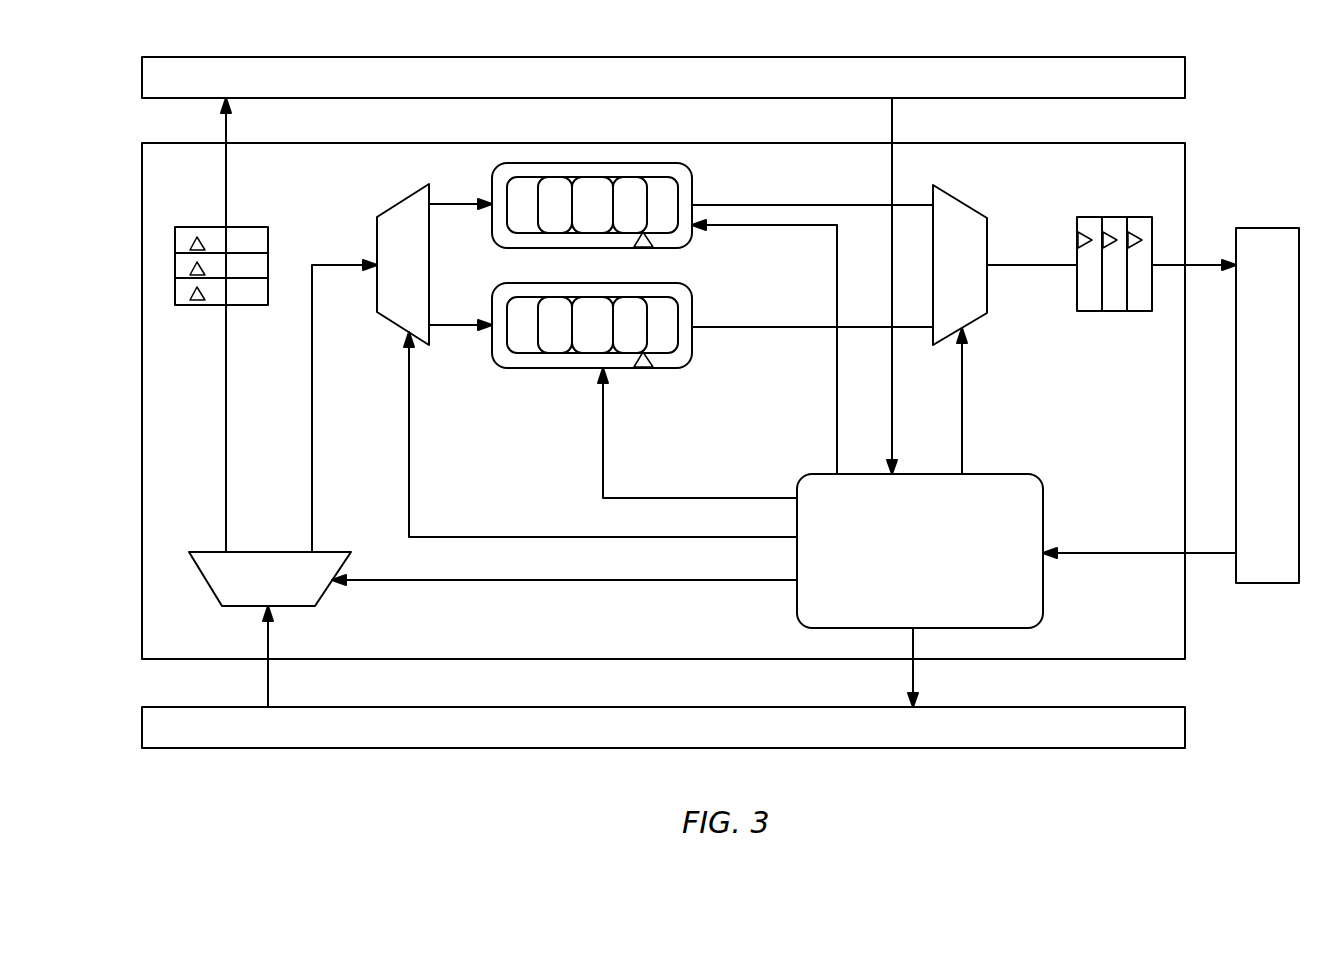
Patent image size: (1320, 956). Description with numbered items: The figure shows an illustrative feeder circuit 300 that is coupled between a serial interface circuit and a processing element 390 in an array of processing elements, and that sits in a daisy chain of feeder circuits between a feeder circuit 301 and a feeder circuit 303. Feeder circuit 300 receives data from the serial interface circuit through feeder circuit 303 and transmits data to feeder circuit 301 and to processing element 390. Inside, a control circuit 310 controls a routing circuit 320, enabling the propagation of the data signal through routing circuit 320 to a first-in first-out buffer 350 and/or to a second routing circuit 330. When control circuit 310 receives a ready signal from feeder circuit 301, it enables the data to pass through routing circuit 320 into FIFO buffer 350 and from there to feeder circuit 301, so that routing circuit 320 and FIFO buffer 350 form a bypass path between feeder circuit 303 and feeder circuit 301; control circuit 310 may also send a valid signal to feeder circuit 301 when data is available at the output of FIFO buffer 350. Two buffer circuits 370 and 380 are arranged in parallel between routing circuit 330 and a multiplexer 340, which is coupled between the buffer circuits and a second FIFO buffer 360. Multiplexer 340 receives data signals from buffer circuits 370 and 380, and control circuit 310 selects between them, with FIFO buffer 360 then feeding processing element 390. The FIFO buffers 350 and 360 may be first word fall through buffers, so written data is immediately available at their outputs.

The feeder circuit 300 is at (1128, 143).
The feeder circuit 301 is at (644, 89).
The feeder circuit 303 is at (644, 737).
The control circuit 310 is at (900, 576).
The routing circuit 320 is at (250, 591).
The routing circuit 330 is at (385, 276).
The multiplexer 340 is at (942, 277).
The first-in first-out (FIFO) buffer 350 is at (255, 227).
The first-in first-out (FIFO) buffer 360 is at (1115, 217).
The buffer circuit 370 is at (693, 183).
The buffer circuit 380 is at (693, 303).
The processing element 390 is at (1250, 419).